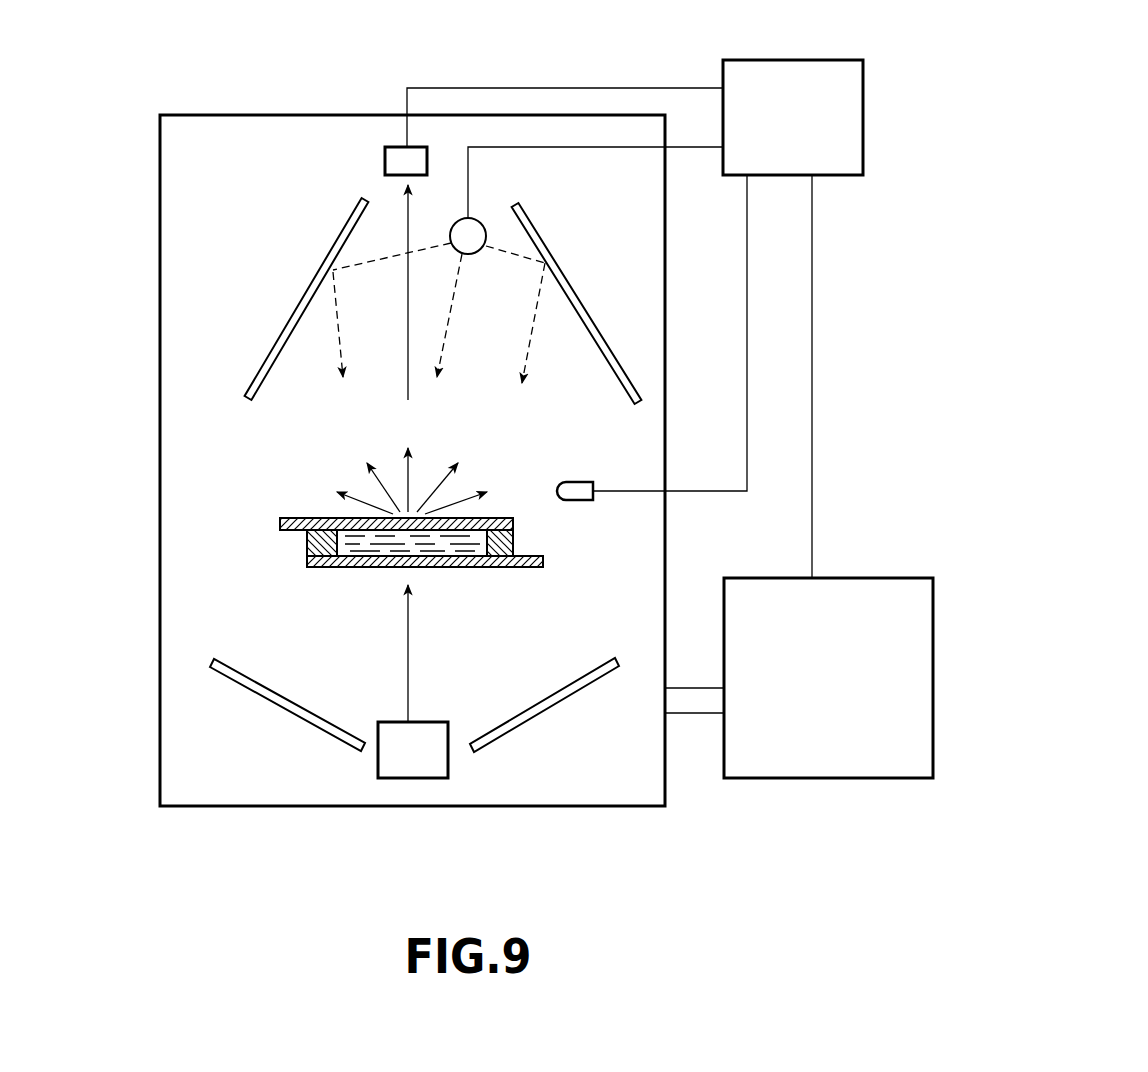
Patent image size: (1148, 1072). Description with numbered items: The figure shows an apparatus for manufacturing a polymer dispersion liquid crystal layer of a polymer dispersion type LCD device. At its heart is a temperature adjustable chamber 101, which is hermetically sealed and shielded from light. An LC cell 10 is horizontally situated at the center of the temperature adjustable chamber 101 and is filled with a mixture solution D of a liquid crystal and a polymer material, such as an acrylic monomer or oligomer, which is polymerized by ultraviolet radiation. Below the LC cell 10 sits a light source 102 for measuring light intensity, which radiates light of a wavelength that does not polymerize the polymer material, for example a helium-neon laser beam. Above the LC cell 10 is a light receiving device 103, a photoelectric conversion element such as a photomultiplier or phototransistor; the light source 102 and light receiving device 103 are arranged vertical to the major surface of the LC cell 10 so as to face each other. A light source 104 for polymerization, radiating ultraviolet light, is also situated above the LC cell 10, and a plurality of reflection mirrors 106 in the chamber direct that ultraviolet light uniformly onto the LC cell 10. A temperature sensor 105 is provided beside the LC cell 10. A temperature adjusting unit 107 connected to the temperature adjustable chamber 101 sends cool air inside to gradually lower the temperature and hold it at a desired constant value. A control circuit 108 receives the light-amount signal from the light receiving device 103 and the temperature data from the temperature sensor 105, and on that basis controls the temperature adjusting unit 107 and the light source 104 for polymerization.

The LC cell 10 is at (325, 572).
The mixture solution D is at (436, 550).
The temperature adjustable chamber 101 is at (167, 806).
The light source 102 is at (408, 778).
The light receiving device 103 is at (385, 160).
The light source for polymerization 104 is at (473, 218).
The temperature sensor 105 is at (582, 500).
The reflection mirrors 106 is at (322, 266).
The temperature adjusting unit 107 is at (786, 778).
The control circuit 108 is at (790, 60).